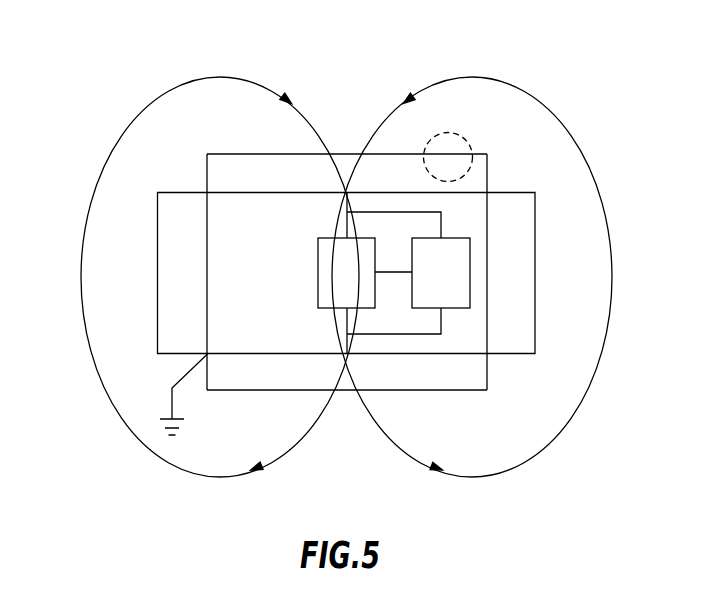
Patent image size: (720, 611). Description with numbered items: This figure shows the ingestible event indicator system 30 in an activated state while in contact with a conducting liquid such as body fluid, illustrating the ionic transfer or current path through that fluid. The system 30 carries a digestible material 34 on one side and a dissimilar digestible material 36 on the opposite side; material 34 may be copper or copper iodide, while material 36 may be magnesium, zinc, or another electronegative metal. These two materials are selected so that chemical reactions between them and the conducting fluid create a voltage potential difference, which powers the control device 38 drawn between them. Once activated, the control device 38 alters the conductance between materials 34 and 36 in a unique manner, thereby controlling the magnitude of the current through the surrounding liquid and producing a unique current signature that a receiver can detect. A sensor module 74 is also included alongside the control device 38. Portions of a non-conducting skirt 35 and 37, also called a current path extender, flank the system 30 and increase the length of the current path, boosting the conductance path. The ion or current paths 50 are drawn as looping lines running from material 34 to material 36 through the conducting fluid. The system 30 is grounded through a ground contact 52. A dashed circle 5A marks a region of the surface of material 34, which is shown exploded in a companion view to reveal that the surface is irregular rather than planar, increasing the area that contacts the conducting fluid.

The system 30 is at (564, 68).
The digestible material 34 is at (363, 186).
The skirt 35 is at (524, 286).
The digestible material 36 is at (363, 385).
The skirt 37 is at (199, 286).
The control device 38 is at (363, 286).
The sensor module 74 is at (457, 286).
The ion or current paths 50 is at (132, 432).
The ground contact 52 is at (167, 395).
The exploded view region 5A is at (472, 145).